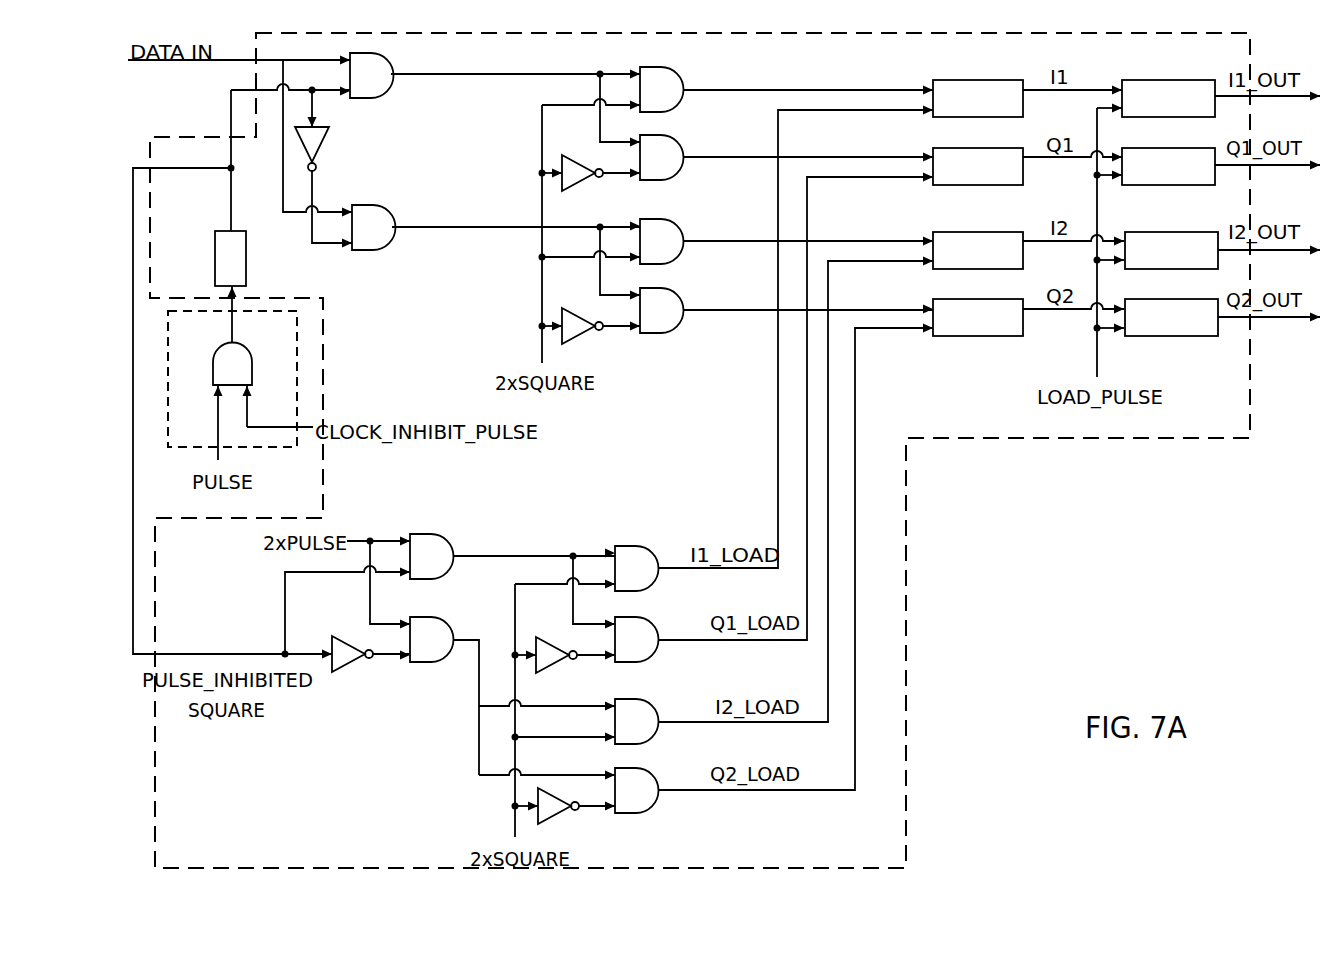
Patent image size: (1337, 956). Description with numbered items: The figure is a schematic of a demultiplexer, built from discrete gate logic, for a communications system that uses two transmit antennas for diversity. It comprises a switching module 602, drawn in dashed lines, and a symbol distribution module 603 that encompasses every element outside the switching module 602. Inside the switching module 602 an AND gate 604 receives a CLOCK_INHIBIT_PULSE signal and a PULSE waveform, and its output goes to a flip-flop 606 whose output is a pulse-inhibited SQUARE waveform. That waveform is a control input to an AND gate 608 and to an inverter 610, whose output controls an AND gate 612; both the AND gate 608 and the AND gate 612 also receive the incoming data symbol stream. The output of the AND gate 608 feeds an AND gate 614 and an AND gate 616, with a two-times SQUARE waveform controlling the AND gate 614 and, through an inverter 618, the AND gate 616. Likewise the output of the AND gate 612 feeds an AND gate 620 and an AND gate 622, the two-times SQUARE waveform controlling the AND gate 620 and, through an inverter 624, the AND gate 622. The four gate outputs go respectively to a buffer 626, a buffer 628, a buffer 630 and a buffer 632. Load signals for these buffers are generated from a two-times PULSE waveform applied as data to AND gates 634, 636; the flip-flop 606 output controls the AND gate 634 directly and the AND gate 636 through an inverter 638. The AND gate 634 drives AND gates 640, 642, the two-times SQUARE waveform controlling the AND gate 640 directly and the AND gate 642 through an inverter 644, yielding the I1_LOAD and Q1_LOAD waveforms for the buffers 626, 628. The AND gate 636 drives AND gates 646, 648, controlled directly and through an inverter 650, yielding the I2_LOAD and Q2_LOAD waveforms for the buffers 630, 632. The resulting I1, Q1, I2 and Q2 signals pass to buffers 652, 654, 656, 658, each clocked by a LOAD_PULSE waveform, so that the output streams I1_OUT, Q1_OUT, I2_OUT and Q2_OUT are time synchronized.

The switching module 602 is at (258, 311).
The symbol distribution module 603 is at (1016, 520).
The AND gate 604 is at (227, 346).
The flip-flop 606 is at (227, 231).
The AND gate 608 is at (383, 97).
The inverter 610 is at (323, 151).
The AND gate 612 is at (391, 208).
The AND gate 614 is at (682, 78).
The AND gate 616 is at (682, 146).
The inverter 618 is at (577, 186).
The AND gate 620 is at (682, 230).
The AND gate 622 is at (682, 299).
The inverter 624 is at (577, 339).
The buffer 626 is at (969, 80).
The buffer 628 is at (969, 148).
The buffer 630 is at (969, 232).
The buffer 632 is at (969, 299).
The AND gate 634 is at (451, 545).
The AND gate 636 is at (451, 628).
The inverter 638 is at (338, 672).
The AND gate 640 is at (632, 548).
The AND gate 642 is at (650, 620).
The inverter 644 is at (546, 673).
The AND gate 646 is at (650, 703).
The AND gate 648 is at (650, 772).
The inverter 650 is at (548, 824).
The buffer 652 is at (1154, 80).
The buffer 654 is at (1154, 148).
The buffer 656 is at (1156, 232).
The buffer 658 is at (1156, 299).